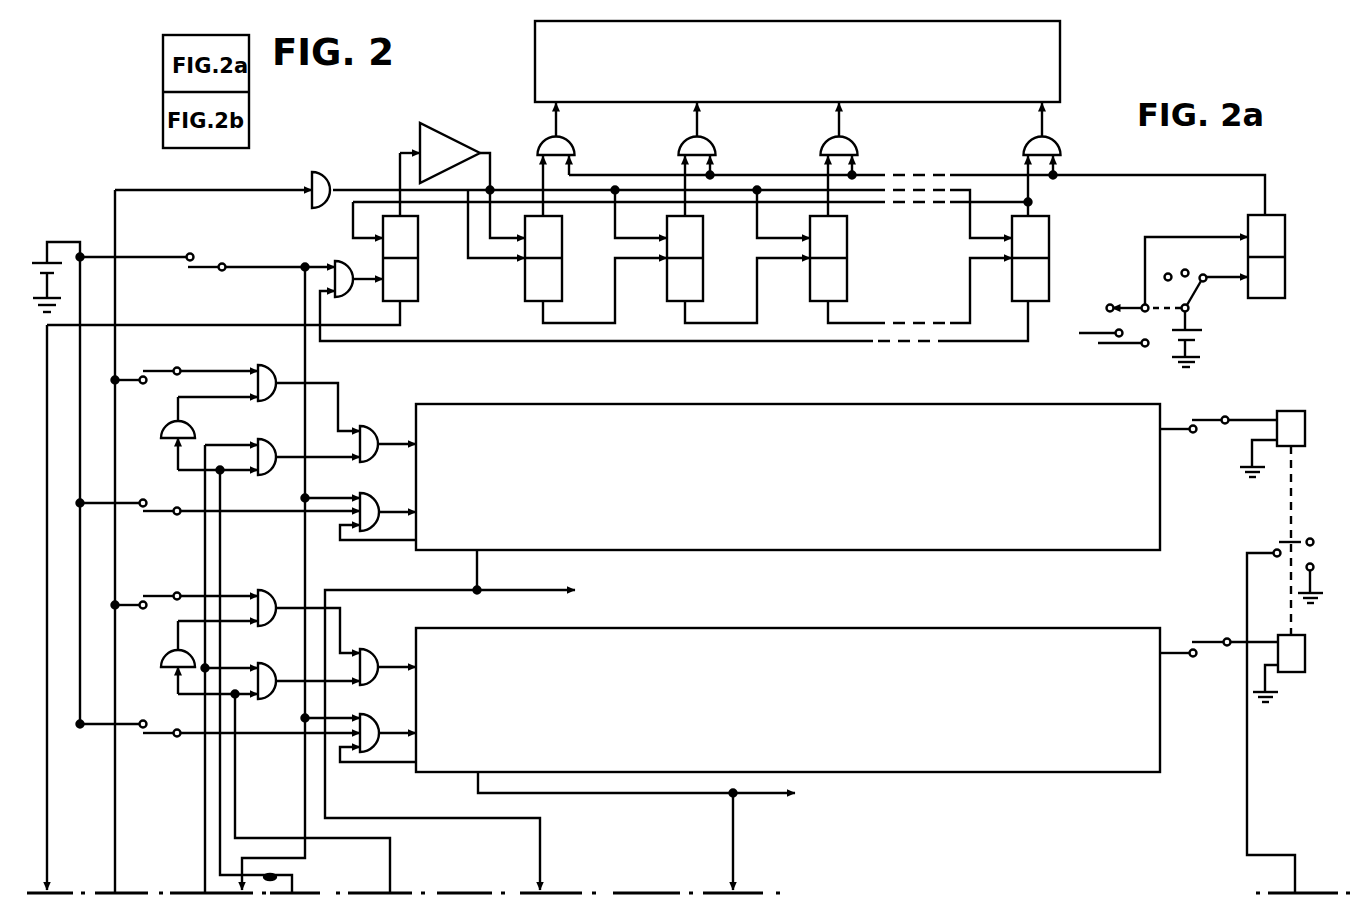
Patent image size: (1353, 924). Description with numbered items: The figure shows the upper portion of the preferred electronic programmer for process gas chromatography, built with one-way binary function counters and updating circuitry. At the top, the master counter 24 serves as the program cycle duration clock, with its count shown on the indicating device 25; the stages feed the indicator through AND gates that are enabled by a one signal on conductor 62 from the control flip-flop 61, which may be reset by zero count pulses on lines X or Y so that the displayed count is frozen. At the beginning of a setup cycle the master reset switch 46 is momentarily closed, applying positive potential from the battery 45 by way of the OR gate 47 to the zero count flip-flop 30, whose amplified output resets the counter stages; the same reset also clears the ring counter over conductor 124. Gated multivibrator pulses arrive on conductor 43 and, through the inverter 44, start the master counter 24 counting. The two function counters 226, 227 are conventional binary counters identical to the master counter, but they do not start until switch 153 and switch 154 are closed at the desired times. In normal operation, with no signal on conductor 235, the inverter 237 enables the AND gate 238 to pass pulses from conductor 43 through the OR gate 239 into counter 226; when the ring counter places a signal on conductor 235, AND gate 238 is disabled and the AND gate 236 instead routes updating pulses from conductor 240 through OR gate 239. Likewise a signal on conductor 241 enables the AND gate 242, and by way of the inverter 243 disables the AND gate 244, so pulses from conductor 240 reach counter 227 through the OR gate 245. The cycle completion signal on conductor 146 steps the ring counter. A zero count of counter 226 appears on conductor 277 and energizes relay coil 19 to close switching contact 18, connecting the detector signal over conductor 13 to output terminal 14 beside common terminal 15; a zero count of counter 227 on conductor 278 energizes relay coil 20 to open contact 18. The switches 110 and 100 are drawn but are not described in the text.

The indicating device 25 is at (827, 76).
The master counter 24 is at (783, 161).
The inverter 44 is at (332, 176).
The battery 45 is at (36, 262).
The master reset switch 46 is at (210, 263).
The OR gate 47 is at (348, 262).
The zero count flip-flop 30 is at (420, 280).
The conductor 62 is at (1108, 175).
The control flip-flop 61 is at (1285, 280).
The switch 153 is at (163, 368).
The AND gate 238 is at (279, 351).
The OR gate 239 is at (367, 428).
The inverter 237 is at (163, 424).
The AND gate 236 is at (278, 429).
The conductor 124 is at (309, 539).
The switch 154 is at (162, 594).
The AND gate 244 is at (278, 589).
The inverter 243 is at (164, 649).
The AND gate 242 is at (275, 663).
The OR gate 245 is at (375, 650).
The function counter 226 is at (797, 491).
The function counter 227 is at (787, 716).
The conductor 277 is at (476, 582).
The conductor 278 is at (735, 816).
The switch 110 is at (1214, 418).
The relay energizing coil 19 is at (1298, 410).
The switching contact 18 is at (1281, 541).
The output terminal 14 is at (1312, 540).
The terminal 15 is at (1313, 568).
The switch 100 is at (1212, 638).
The relay energizing coil 20 is at (1305, 655).
The conductor 13 is at (1245, 744).
The conductor 146 is at (47, 806).
The conductor 43 is at (113, 797).
The conductor 240 is at (204, 796).
The conductor 241 is at (235, 793).
The conductor 235 is at (276, 877).